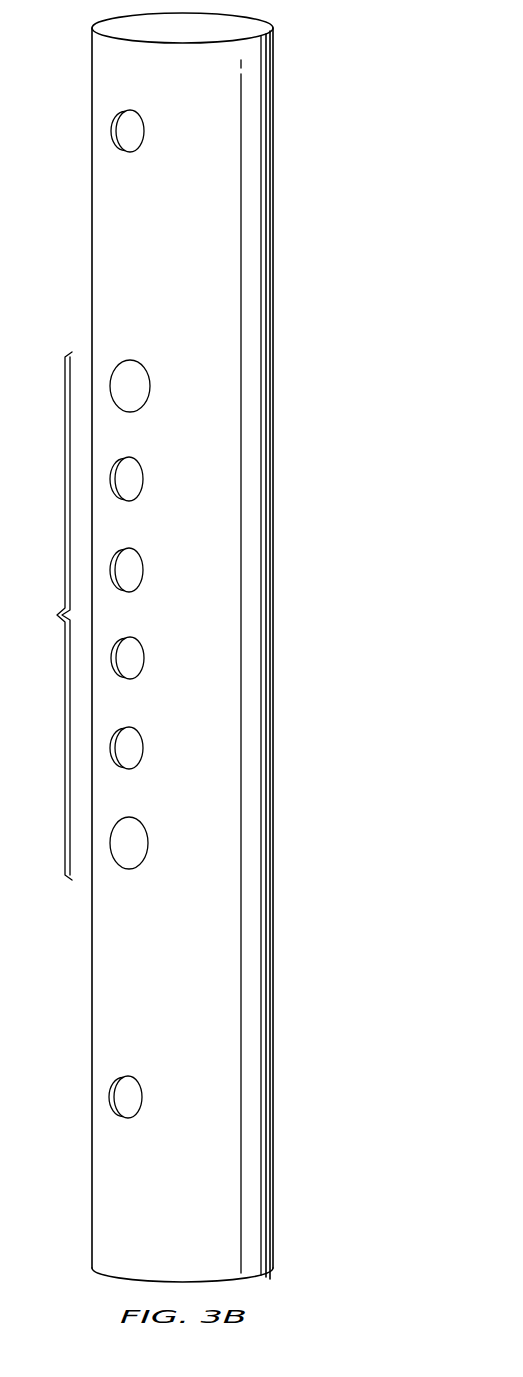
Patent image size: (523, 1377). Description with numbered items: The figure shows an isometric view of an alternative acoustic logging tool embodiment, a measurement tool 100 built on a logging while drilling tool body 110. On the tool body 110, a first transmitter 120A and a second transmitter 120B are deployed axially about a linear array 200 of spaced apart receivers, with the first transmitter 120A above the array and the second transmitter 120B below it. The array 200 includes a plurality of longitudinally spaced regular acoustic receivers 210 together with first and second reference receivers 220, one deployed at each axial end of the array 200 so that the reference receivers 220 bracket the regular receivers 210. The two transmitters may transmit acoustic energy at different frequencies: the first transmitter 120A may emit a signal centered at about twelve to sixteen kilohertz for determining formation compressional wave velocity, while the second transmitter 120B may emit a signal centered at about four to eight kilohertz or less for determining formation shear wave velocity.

The measurement tool 100 is at (248, 647).
The logging while drilling tool body 110 is at (273, 343).
The first transmitter 120A is at (144, 113).
The second transmitter 120B is at (139, 1113).
The linear array 200 is at (42, 616).
The acoustic receiver 210 is at (143, 461).
The reference receiver 220 is at (146, 364).